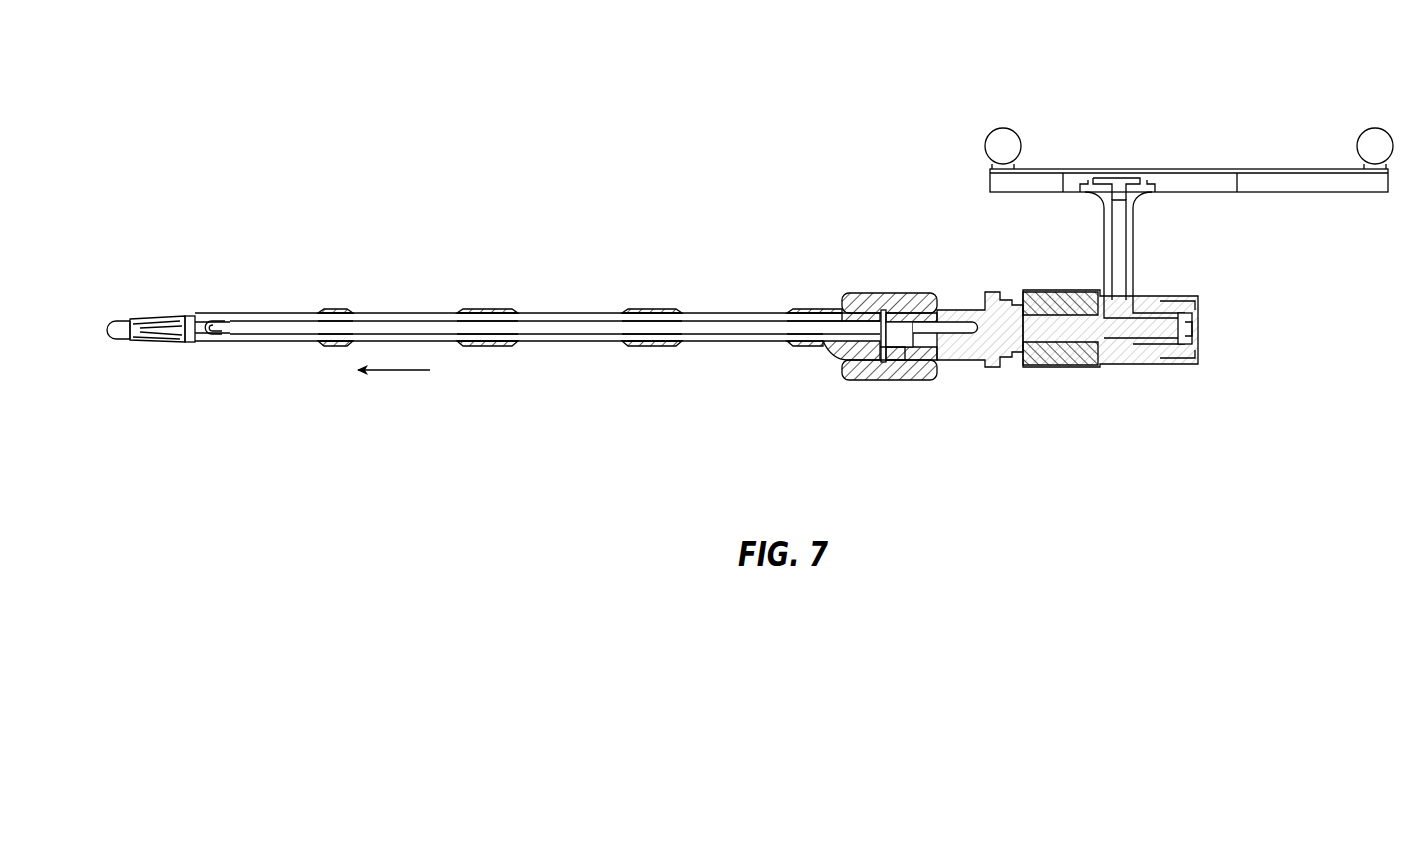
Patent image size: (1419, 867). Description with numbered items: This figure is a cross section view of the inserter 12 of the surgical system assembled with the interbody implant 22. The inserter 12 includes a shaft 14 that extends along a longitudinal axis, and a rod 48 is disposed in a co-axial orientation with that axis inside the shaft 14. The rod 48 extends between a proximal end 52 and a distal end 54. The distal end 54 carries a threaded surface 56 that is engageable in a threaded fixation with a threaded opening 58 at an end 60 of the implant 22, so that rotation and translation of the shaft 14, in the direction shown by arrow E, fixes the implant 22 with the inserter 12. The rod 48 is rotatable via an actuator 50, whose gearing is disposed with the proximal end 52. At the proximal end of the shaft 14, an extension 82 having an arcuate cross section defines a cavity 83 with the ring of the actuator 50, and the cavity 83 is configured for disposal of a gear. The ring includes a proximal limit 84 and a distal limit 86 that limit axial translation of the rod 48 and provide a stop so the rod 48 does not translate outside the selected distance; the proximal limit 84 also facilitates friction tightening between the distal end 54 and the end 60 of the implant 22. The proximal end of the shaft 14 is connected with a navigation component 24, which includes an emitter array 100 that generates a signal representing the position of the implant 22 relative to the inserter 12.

The emitter array 100 is at (986, 80).
The navigation component 24 is at (1206, 180).
The interbody implant 22 is at (114, 294).
The threaded surface 56 is at (222, 315).
The inserter 12 is at (279, 294).
The shaft 14 is at (399, 313).
The rod 48 is at (704, 328).
The actuator 50 is at (861, 264).
The proximal limit 84 is at (894, 297).
The distal limit 86 is at (906, 300).
The end of implant 60 is at (178, 343).
The threaded opening 58 is at (203, 338).
The distal end of rod 54 is at (232, 330).
The extension 82 is at (849, 358).
The cavity 83 is at (883, 362).
The proximal end of rod 52 is at (935, 330).